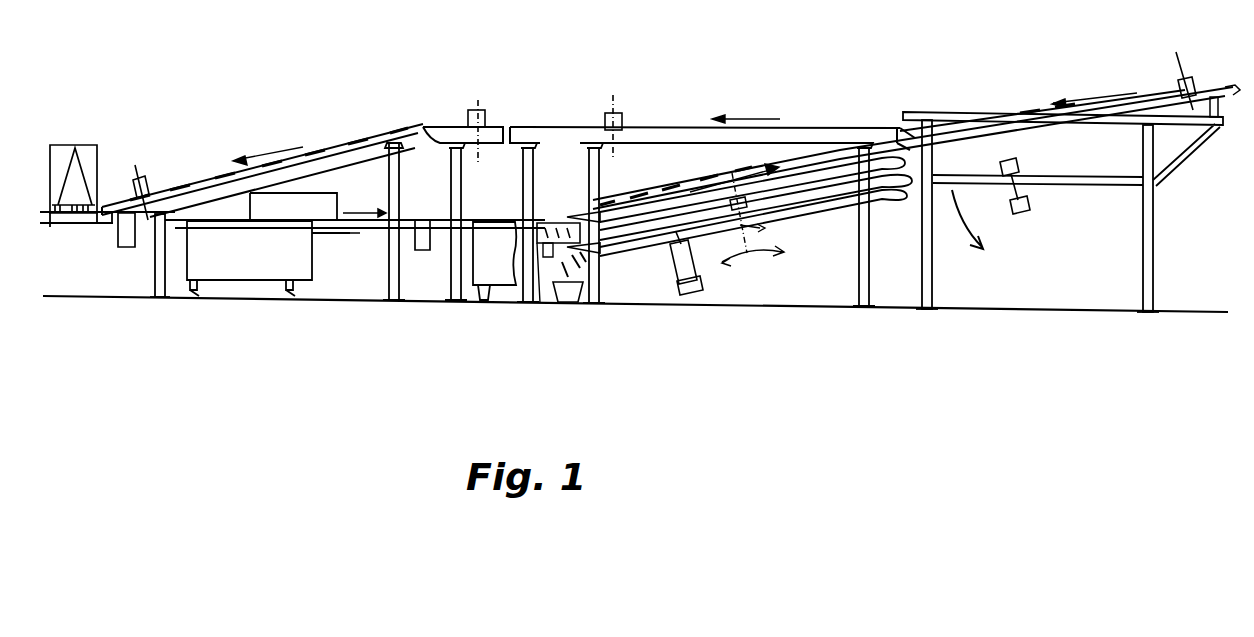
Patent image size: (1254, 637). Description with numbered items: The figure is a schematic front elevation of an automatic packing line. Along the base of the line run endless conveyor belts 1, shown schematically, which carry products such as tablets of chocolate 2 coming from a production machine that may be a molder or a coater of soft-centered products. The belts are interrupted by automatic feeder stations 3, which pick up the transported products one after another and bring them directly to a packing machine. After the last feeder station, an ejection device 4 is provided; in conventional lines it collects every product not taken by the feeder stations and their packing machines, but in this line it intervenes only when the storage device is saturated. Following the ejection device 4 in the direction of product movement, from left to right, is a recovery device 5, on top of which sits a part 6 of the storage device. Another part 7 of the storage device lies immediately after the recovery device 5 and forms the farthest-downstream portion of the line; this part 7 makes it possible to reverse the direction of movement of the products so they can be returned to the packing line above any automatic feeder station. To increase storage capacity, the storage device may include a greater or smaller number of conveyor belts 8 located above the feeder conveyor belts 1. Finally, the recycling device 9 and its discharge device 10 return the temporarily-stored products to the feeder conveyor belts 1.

The endless conveyor belts 1 is at (148, 220).
The tablets of chocolate 2 is at (560, 227).
The automatic feeder stations 3 is at (252, 261).
The ejection device 4 is at (540, 290).
The recovery device 5 is at (845, 167).
The part of the storage device 6 is at (688, 135).
The part of the storage device 7 is at (1043, 137).
The conveyor belts 8 is at (457, 128).
The recycling device 9 is at (278, 167).
The discharge device 10 is at (63, 158).